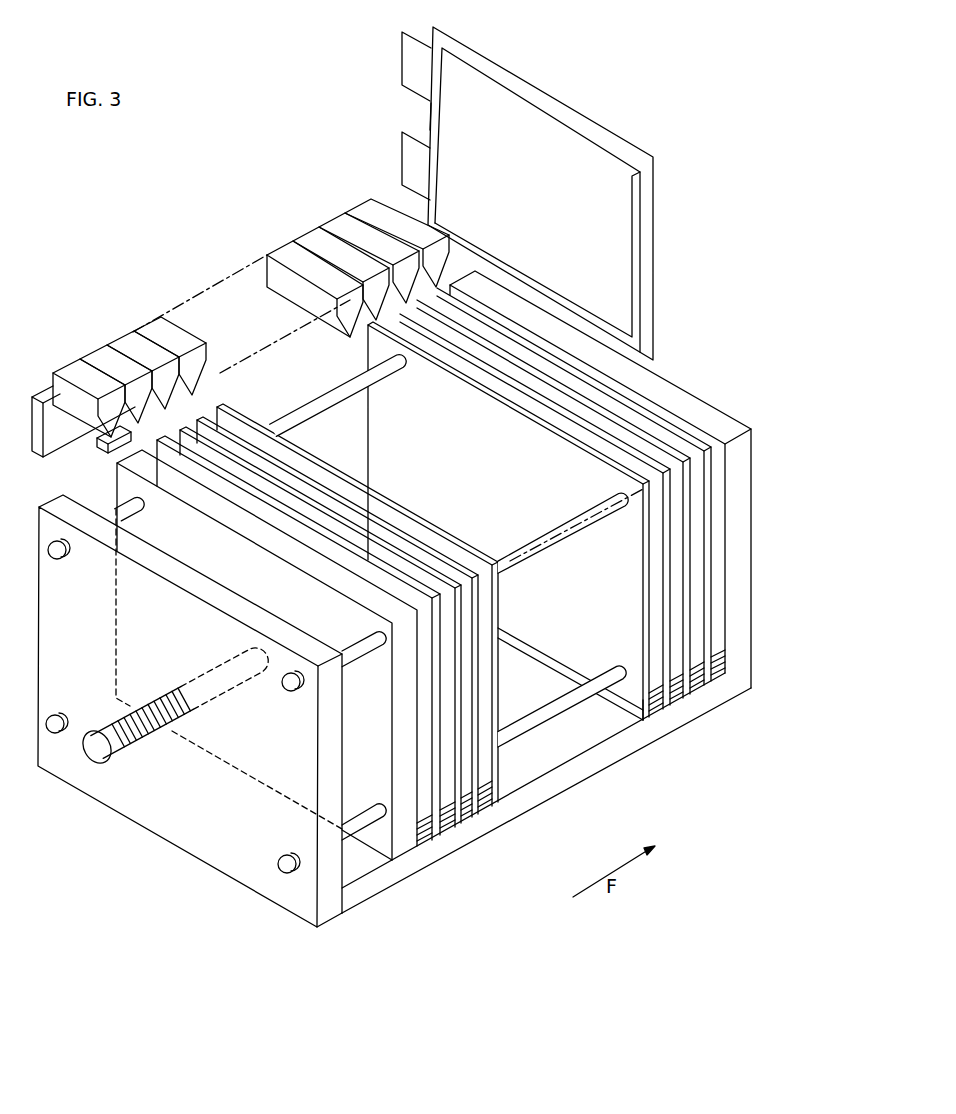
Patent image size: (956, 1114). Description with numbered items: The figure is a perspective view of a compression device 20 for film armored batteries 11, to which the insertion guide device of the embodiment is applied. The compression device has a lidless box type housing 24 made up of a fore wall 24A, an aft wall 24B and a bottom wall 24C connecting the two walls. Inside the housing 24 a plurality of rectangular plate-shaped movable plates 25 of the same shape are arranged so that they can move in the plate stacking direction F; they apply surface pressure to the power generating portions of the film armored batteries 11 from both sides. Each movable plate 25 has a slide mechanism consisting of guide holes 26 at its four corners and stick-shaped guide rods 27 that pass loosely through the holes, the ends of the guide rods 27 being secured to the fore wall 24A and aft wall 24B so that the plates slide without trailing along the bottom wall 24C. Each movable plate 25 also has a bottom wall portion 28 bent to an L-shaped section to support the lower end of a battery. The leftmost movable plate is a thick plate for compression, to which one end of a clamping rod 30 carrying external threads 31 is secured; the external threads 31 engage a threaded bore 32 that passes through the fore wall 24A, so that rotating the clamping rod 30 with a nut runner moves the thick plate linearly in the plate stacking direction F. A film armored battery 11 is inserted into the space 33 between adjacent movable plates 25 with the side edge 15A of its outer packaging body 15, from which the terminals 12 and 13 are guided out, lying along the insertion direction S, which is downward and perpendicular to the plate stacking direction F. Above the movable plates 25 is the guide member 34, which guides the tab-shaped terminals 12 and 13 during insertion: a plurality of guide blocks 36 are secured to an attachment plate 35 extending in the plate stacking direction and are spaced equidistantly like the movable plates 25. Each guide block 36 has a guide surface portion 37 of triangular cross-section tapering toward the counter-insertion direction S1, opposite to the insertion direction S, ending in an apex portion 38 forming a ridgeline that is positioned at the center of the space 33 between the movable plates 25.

The film armored battery 11 is at (495, 189).
The terminal 12 is at (409, 166).
The terminal 13 is at (409, 59).
The outer packaging body 15 is at (588, 177).
The side edge 15A is at (430, 120).
The compression device 20 is at (416, 623).
The housing 24 is at (416, 623).
The fore wall 24A is at (225, 858).
The aft wall 24B is at (736, 563).
The bottom wall 24C is at (393, 882).
The movable plate 25 is at (486, 748).
The guide hole 26 is at (362, 752).
The guide rod 27 is at (303, 420).
The bottom wall portion 28 is at (640, 723).
The clamping rod 30 is at (142, 763).
The external threads 31 is at (119, 757).
The threaded bore 32 is at (165, 732).
The space 33 is at (438, 547).
The guide member 34 is at (124, 338).
The attachment plate 35 is at (33, 403).
The guide block 36 is at (82, 358).
The guide surface portion 37 is at (127, 429).
The apex portion 38 is at (200, 361).
The insertion direction S is at (405, 272).
The counter-insertion direction S1 is at (708, 133).